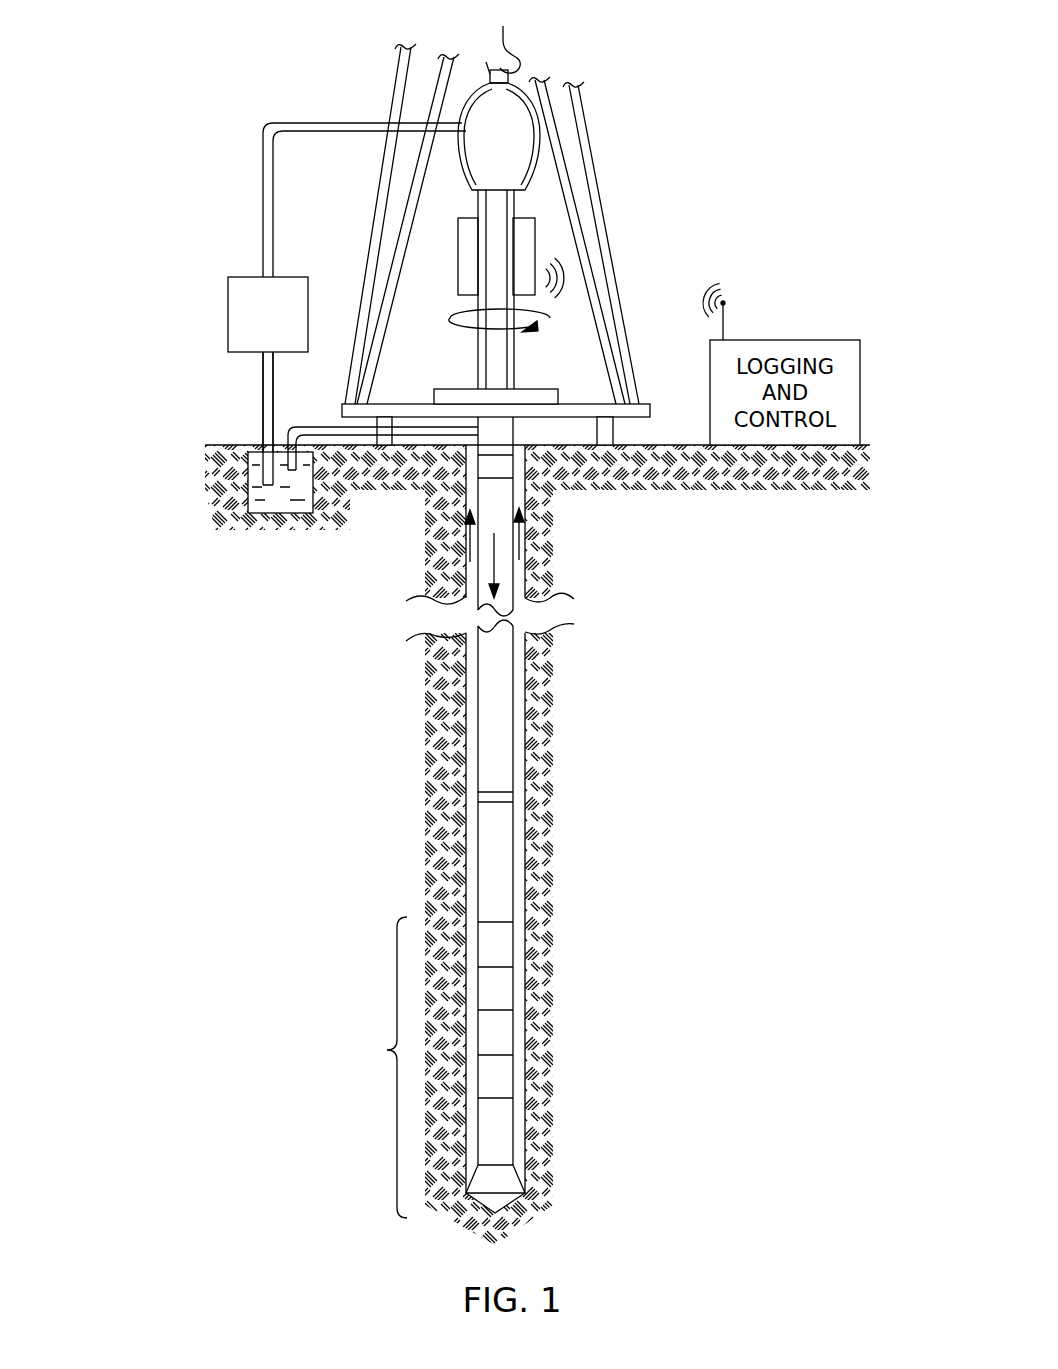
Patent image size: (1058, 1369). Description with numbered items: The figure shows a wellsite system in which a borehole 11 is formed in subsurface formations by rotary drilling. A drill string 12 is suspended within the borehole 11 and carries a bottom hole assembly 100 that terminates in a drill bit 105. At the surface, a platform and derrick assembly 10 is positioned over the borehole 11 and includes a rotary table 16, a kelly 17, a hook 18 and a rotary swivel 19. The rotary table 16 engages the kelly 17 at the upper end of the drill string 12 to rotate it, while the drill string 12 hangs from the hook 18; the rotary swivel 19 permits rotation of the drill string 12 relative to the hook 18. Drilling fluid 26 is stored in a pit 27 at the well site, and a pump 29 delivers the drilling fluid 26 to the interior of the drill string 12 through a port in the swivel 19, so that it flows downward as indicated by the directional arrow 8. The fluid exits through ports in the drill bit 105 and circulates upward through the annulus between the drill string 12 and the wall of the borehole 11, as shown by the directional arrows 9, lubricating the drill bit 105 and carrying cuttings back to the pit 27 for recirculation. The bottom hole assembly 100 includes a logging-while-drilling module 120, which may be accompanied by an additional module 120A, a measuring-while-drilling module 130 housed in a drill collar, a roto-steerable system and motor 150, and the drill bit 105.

The platform and derrick assembly 10 is at (624, 106).
The hook 18 is at (500, 38).
The rotary swivel 19 is at (472, 191).
The kelly 17 is at (490, 362).
The rotary table 16 is at (520, 388).
The drill string 12 is at (488, 432).
The borehole 11 is at (520, 436).
The directional arrow 8 is at (491, 566).
The directional arrows 9 is at (468, 545).
The pump 29 is at (240, 353).
The pit 27 is at (255, 436).
The drilling fluid 26 is at (272, 512).
The bottom hole assembly 100 is at (387, 1050).
The logging-while-drilling module 120 is at (500, 997).
The measuring-while-drilling module 130 is at (500, 1037).
The logging-while-drilling module 120A is at (500, 1083).
The roto-steerable system and motor 150 is at (500, 1138).
The drill bit 105 is at (500, 1183).